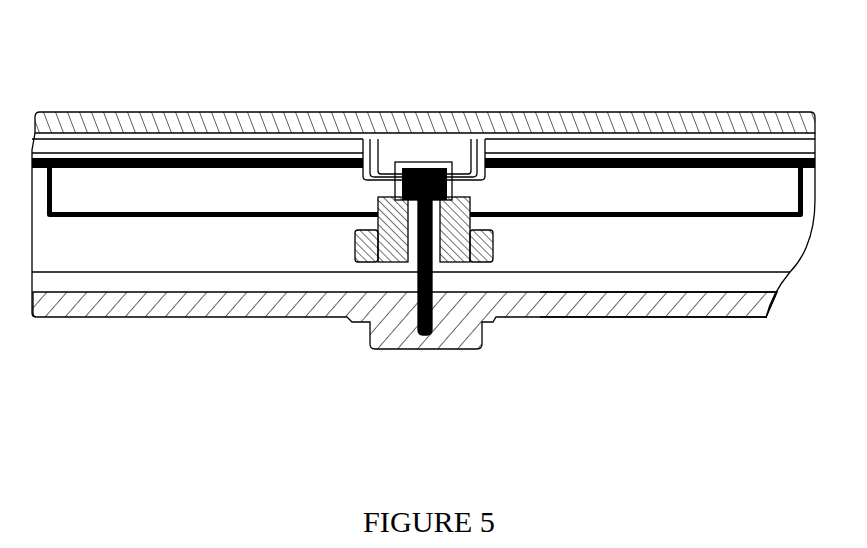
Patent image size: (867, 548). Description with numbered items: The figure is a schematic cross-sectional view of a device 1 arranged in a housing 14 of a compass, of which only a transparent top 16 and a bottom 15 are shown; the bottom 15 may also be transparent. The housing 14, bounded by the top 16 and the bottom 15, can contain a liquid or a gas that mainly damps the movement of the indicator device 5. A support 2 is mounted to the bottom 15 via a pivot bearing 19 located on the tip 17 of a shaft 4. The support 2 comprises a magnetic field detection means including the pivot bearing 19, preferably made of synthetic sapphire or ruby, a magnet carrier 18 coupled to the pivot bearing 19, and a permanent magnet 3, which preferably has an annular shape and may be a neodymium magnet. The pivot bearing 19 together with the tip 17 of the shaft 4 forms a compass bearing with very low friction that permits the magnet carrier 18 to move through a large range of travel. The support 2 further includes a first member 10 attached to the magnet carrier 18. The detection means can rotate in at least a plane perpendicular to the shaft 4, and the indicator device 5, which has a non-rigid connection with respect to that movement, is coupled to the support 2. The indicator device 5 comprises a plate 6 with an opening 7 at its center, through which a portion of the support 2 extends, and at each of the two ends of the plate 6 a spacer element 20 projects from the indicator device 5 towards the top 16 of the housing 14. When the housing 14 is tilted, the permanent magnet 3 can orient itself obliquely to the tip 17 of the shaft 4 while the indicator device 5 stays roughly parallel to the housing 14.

The device 1 is at (524, 200).
The support 2 is at (376, 168).
The permanent magnet 3 is at (492, 263).
The shaft 4 is at (407, 322).
The indicator device 5 is at (232, 208).
The plate 6 is at (650, 218).
The opening 7 is at (490, 210).
The first member 10 is at (372, 198).
The housing 14 is at (243, 300).
The bottom 15 is at (563, 298).
The transparent top 16 is at (617, 122).
The tip 17 is at (447, 165).
The magnet carrier 18 is at (383, 263).
The pivot bearing 19 is at (420, 165).
The spacer element 20 is at (52, 178).